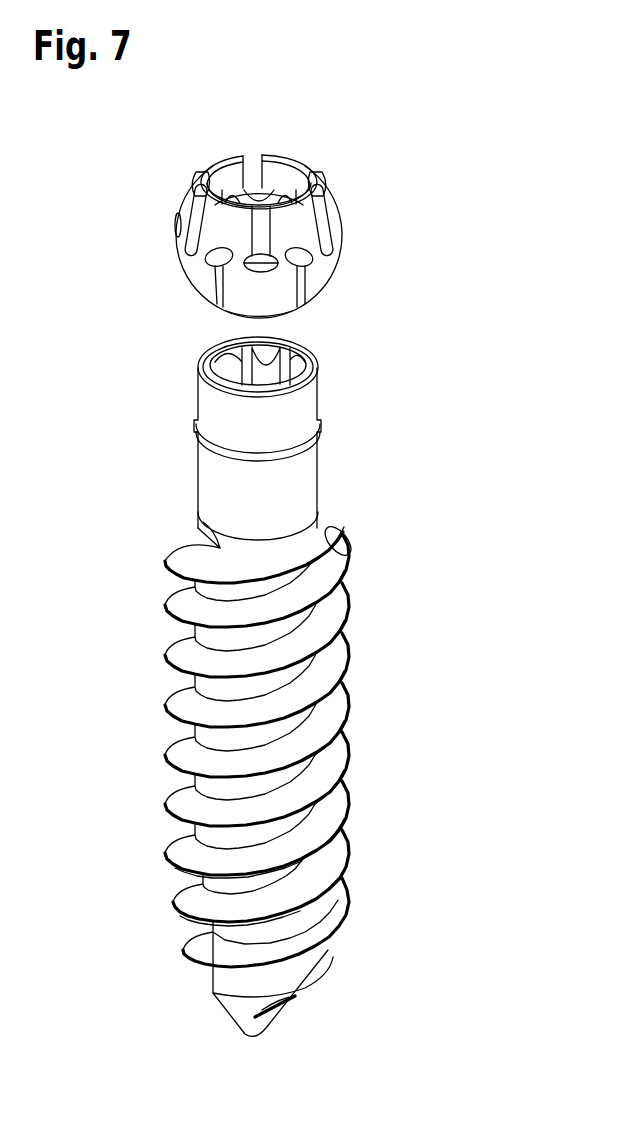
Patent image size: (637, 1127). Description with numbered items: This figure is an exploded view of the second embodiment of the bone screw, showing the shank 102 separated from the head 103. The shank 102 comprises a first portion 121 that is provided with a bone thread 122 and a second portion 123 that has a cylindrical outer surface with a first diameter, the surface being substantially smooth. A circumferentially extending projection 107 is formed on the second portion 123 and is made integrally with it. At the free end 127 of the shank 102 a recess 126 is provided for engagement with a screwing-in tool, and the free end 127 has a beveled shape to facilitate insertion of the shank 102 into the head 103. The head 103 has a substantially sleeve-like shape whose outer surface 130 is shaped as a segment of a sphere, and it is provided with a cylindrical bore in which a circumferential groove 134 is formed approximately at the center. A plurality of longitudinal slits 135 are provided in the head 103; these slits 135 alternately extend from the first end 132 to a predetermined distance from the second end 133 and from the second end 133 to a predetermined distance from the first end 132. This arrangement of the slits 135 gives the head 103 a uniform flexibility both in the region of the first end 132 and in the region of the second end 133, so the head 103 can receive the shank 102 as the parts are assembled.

The shank 102 is at (282, 686).
The head 103 is at (252, 209).
The circumferentially extending projection 107 is at (215, 457).
The first portion 121 is at (215, 737).
The bone thread 122 is at (185, 805).
The second portion 123 is at (267, 438).
The recess 126 is at (247, 373).
The free end 127 is at (318, 362).
The outer surface 130 is at (201, 266).
The first end 132 is at (228, 156).
The second end 133 is at (242, 318).
The circumferential groove 134 is at (275, 198).
The longitudinal slits 135 is at (300, 284).